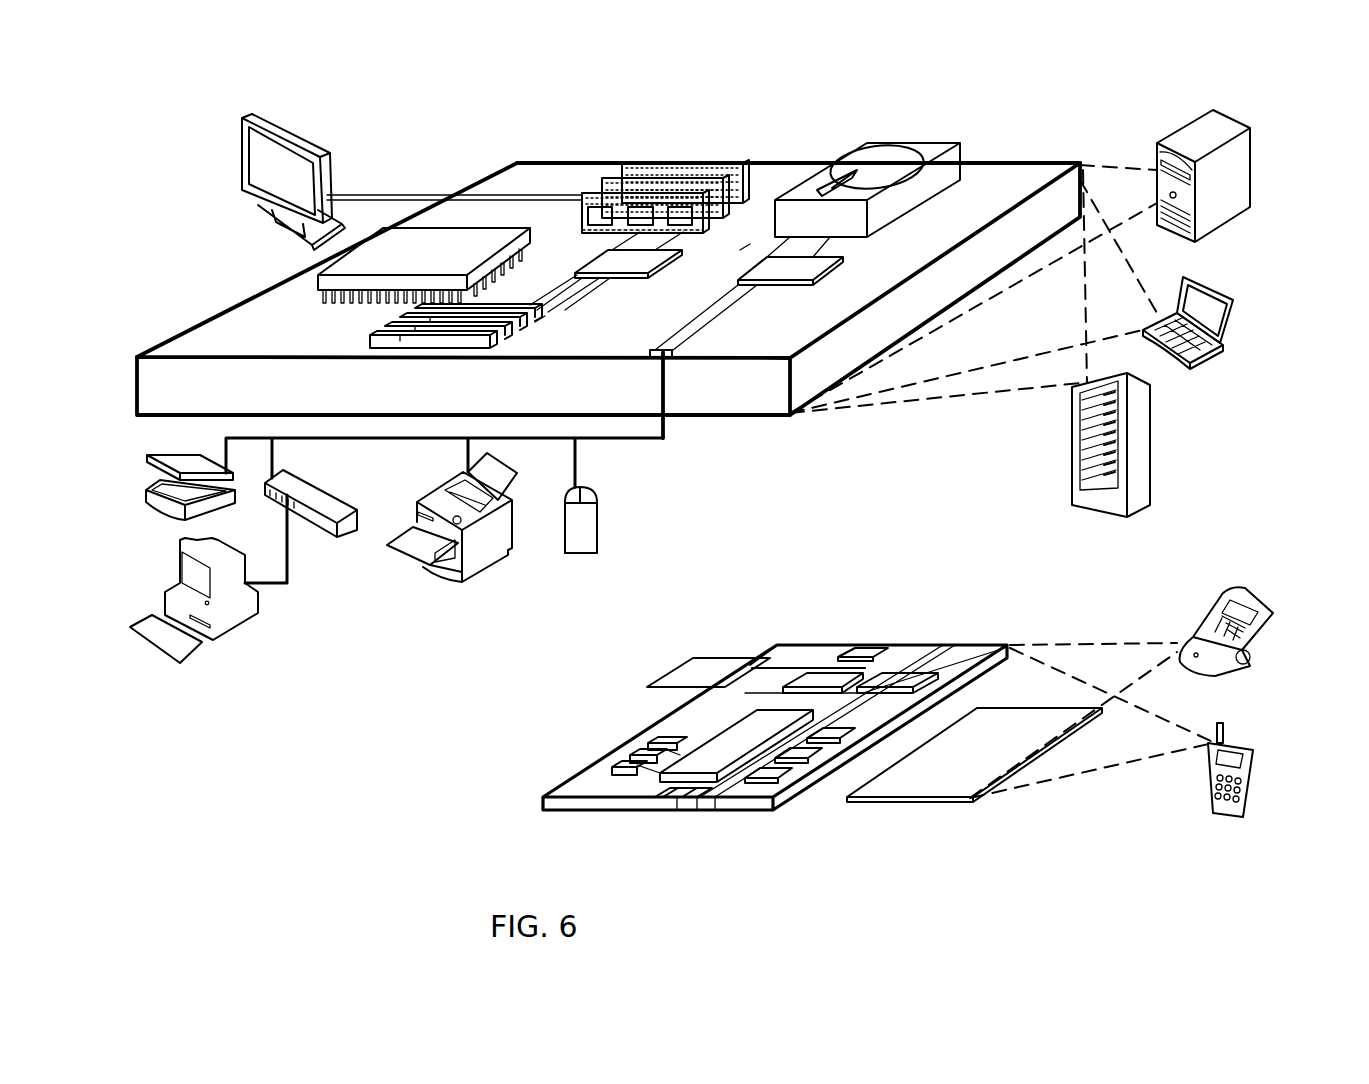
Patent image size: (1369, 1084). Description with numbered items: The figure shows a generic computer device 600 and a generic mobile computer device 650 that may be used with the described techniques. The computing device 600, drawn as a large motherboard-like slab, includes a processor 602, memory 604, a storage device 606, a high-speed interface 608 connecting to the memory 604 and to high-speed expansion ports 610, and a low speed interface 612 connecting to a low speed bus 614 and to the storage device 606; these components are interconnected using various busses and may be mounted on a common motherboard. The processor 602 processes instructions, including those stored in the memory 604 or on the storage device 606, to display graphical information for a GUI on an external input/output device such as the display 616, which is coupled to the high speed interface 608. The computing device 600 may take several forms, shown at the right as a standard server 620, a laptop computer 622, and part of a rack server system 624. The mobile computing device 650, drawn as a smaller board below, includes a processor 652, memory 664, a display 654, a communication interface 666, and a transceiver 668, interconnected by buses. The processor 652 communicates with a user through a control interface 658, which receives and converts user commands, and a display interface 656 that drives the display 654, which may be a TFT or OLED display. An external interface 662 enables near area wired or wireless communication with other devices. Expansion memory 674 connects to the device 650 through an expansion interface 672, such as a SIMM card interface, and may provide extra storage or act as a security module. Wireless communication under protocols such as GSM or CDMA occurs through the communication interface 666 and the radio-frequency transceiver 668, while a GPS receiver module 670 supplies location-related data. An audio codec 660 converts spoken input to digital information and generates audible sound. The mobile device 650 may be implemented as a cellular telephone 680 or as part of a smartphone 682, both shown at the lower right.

The computing device 600 is at (442, 136).
The processor 602 is at (318, 283).
The memory 604 is at (637, 155).
The storage device 606 is at (860, 143).
The high-speed interface 608 is at (595, 263).
The high-speed expansion ports 610 is at (393, 325).
The low speed interface 612 is at (790, 267).
The low speed bus 614 is at (670, 358).
The display 616 is at (242, 122).
The standard server 620 is at (1157, 146).
The laptop computer 622 is at (1183, 275).
The rack server system 624 is at (1067, 477).
The mobile computing device 650 is at (716, 606).
The processor 652 is at (697, 784).
The display 654 is at (973, 800).
The display interface 656 is at (787, 783).
The control interface 658 is at (820, 762).
The audio codec 660 is at (830, 742).
The external interface 662 is at (673, 800).
The memory 664 is at (630, 763).
The communication interface 666 is at (823, 680).
The transceiver 668 is at (897, 678).
The GPS receiver module 670 is at (875, 650).
The expansion interface 672 is at (748, 657).
The expansion memory 674 is at (683, 658).
The cellular telephone 680 is at (1233, 587).
The smartphone 682 is at (1215, 720).